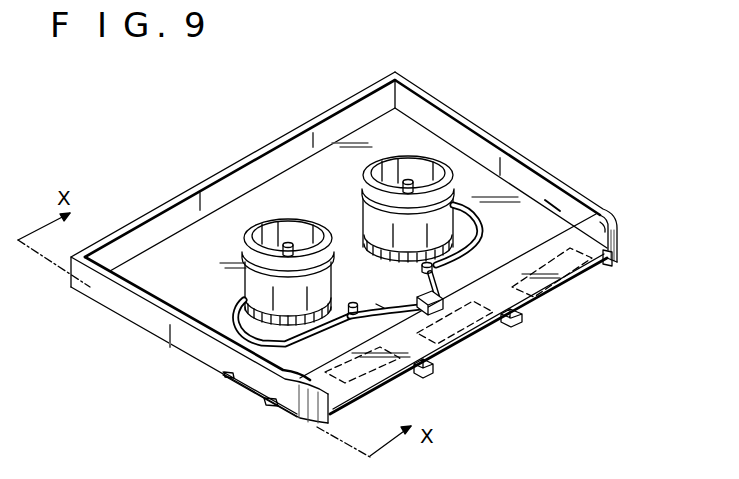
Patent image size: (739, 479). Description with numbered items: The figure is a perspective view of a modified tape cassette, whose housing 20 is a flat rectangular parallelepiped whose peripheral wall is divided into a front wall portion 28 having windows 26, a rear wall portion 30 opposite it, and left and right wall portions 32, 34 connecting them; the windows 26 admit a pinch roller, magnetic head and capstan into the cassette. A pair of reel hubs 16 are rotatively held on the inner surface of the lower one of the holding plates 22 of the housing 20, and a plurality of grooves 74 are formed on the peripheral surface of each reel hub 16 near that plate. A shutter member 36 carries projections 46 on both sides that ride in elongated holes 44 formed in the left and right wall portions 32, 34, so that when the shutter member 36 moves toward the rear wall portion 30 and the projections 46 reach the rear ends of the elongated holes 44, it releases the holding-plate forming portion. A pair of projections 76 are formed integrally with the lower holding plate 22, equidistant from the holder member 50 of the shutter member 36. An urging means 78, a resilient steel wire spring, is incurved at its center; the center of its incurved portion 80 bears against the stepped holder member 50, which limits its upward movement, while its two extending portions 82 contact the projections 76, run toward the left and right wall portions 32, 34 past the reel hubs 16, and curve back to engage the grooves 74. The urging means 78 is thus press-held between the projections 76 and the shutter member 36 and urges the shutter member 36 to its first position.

The reel hubs 16 is at (287, 229).
The housing 20 is at (170, 217).
The holding plates 22 is at (330, 152).
The windows 26 is at (568, 286).
The front wall portion 28 is at (331, 418).
The rear wall portion 30 is at (234, 164).
The left wall portion 32 is at (141, 313).
The right wall portion 34 is at (466, 140).
The shutter member 36 is at (538, 256).
The elongated holes 44 is at (236, 386).
The projections 46 is at (270, 408).
The holder member 50 is at (418, 298).
The grooves 74 is at (243, 298).
The projections 76 is at (353, 305).
The urging means 78 is at (379, 303).
The incurved portion 80 is at (381, 312).
The extending portions 82 is at (322, 335).